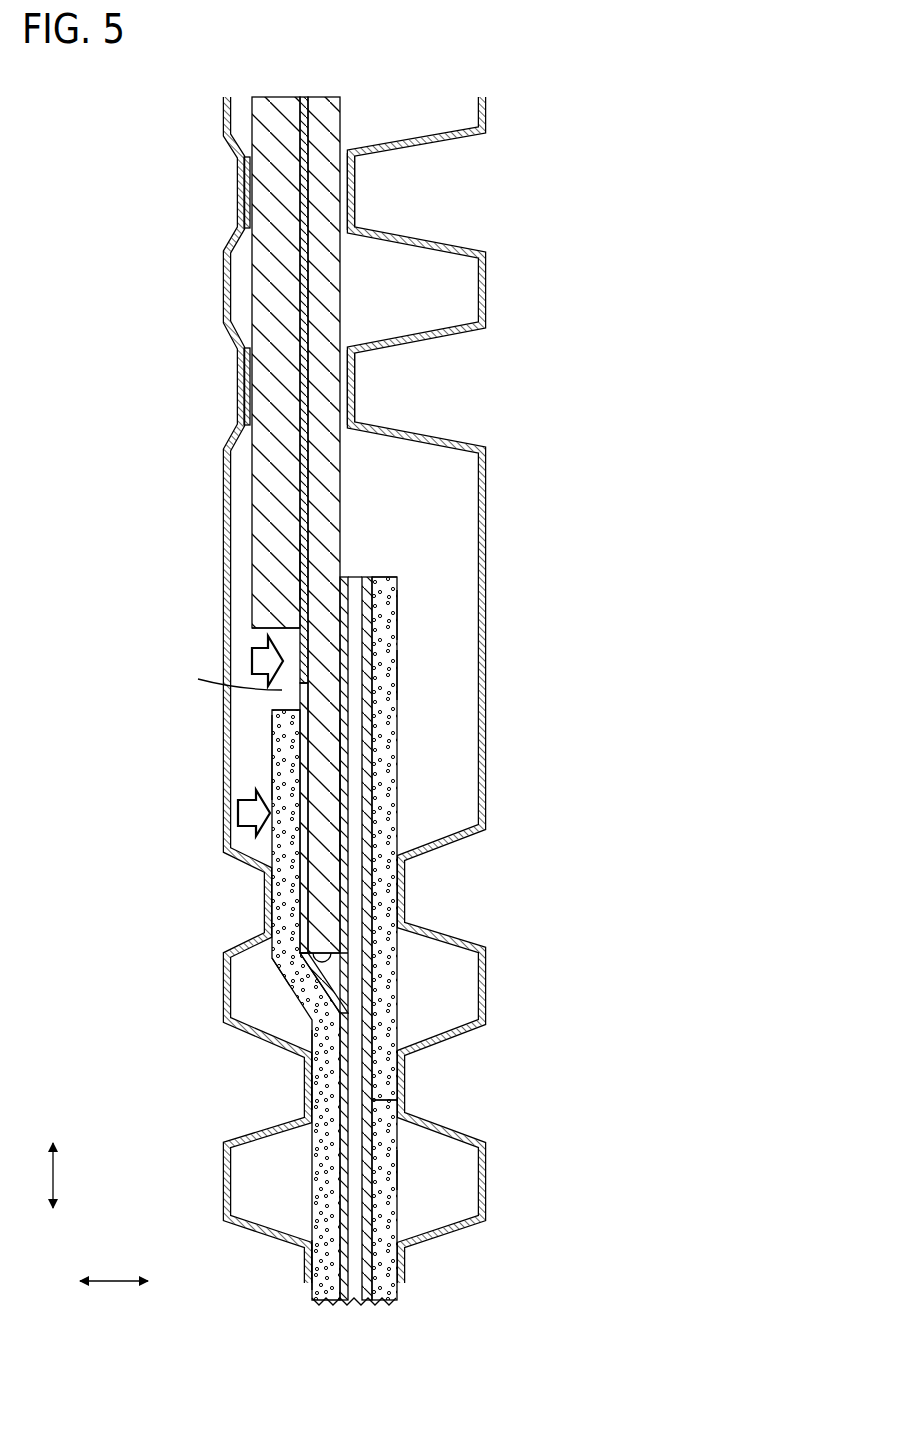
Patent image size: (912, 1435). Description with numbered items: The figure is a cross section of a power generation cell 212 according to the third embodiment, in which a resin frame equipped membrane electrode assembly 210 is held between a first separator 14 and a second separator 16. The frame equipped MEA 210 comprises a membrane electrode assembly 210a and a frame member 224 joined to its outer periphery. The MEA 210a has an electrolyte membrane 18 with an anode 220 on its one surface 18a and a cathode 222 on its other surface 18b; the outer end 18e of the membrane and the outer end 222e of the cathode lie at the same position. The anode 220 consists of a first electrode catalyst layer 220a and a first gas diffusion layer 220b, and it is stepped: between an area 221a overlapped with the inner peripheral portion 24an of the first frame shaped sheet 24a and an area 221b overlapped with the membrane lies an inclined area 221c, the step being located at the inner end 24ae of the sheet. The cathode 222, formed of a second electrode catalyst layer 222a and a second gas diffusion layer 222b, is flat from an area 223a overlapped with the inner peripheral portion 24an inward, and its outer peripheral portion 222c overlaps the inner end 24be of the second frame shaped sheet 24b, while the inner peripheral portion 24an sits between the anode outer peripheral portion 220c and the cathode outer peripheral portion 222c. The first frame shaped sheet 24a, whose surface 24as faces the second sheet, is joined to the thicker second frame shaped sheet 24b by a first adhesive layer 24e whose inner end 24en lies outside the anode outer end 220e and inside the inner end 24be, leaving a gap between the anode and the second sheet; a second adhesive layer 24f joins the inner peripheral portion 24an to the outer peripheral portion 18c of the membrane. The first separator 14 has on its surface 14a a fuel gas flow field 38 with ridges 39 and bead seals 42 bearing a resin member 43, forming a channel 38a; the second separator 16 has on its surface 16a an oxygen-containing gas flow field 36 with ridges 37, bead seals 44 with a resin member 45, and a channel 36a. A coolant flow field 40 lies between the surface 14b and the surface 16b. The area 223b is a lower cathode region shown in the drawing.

The power generation cell 212 is at (146, 92).
The first separator 14 is at (221, 492).
The surface of first separator 14a is at (231, 1175).
The surface of first separator 14b is at (226, 527).
The second separator 16 is at (489, 490).
The surface of second separator 16a is at (479, 958).
The surface of second separator 16b is at (487, 530).
The electrolyte membrane 18 is at (360, 910).
The one surface of electrolyte membrane 18a is at (318, 989).
The other surface of electrolyte membrane 18b is at (366, 1000).
The outer peripheral portion of electrolyte membrane 18c is at (351, 726).
The outer end of electrolyte membrane 18e is at (354, 576).
The first frame shaped sheet 24a is at (323, 208).
The second frame shaped sheet 24b is at (268, 193).
The first adhesive layer 24e is at (312, 500).
The surface of first frame shaped sheet 24as is at (304, 567).
The inner end of second frame shaped sheet 24be is at (268, 634).
The inner end of first adhesive layer 24en is at (300, 684).
The inner peripheral portion of first frame shaped sheet 24an is at (322, 783).
The inner end of first frame shaped sheet 24ae is at (300, 972).
The second adhesive layer 24f is at (346, 795).
The oxygen-containing gas flow field 36 is at (441, 1231).
The channel 36a is at (447, 598).
The ridges 37 is at (311, 1103).
The fuel gas flow field 38 is at (270, 1204).
The channel 38a is at (266, 835).
The ridges 39 is at (403, 1058).
The coolant flow field 40 is at (256, 878).
The bead seals 42 is at (236, 135).
The resin member 43 is at (247, 172).
The bead seals 44 is at (449, 148).
The resin member 45 is at (353, 182).
The resin frame equipped membrane electrode assembly 210 is at (427, 521).
The membrane electrode assembly 210a is at (311, 1165).
The anode 220 is at (155, 1045).
The first electrode catalyst layer 220a is at (312, 1068).
The first gas diffusion layer 220b is at (310, 1085).
The outer peripheral portion of anode 220c is at (272, 735).
The outer end of anode 220e is at (283, 712).
The area overlapped with inner peripheral portion 221a is at (283, 757).
The area overlapped with electrolyte membrane 221b is at (325, 1263).
The inclined area 221c is at (276, 983).
The cathode 222 is at (501, 921).
The second electrode catalyst layer 222a is at (371, 1090).
The second gas diffusion layer 222b is at (376, 1112).
The outer peripheral portion of cathode 222c is at (393, 612).
The outer end of cathode 222e is at (382, 576).
The area overlapped with inner peripheral portion 223a is at (391, 673).
The porous layer lower portion 223b is at (388, 1165).
The frame member 224 is at (249, 282).